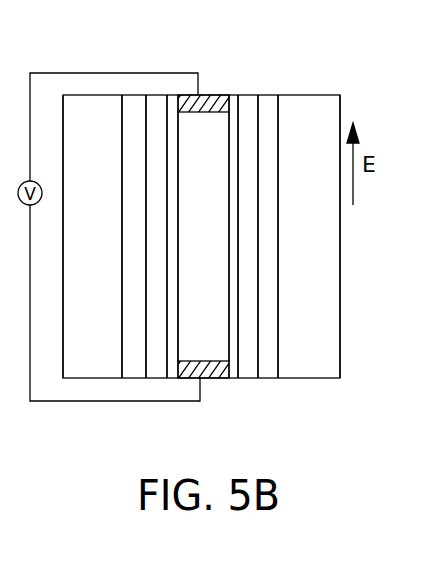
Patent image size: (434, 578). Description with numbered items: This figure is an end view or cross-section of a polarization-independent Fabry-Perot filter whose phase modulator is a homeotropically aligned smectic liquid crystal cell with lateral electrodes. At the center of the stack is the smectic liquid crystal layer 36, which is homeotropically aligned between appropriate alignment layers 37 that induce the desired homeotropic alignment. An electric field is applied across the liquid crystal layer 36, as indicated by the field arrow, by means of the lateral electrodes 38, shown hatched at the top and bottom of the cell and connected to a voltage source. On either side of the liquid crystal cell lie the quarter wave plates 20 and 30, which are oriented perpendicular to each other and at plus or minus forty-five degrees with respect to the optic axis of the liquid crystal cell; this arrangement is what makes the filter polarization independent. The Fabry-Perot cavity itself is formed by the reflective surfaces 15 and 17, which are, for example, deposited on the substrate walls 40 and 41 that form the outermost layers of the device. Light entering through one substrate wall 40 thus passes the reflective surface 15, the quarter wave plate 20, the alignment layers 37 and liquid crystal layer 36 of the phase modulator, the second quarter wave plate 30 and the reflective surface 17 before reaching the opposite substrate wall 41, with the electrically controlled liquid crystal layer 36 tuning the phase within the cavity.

The quarter wave plate 20 is at (130, 95).
The quarter wave plate 30 is at (245, 93).
The reflective surface 15 is at (137, 380).
The reflective surface 17 is at (268, 380).
The alignment layer 37 is at (175, 95).
The lateral electrode 38 is at (218, 95).
The smectic liquid crystal layer 36 is at (210, 352).
The substrate wall 40 is at (95, 380).
The substrate wall 41 is at (312, 380).